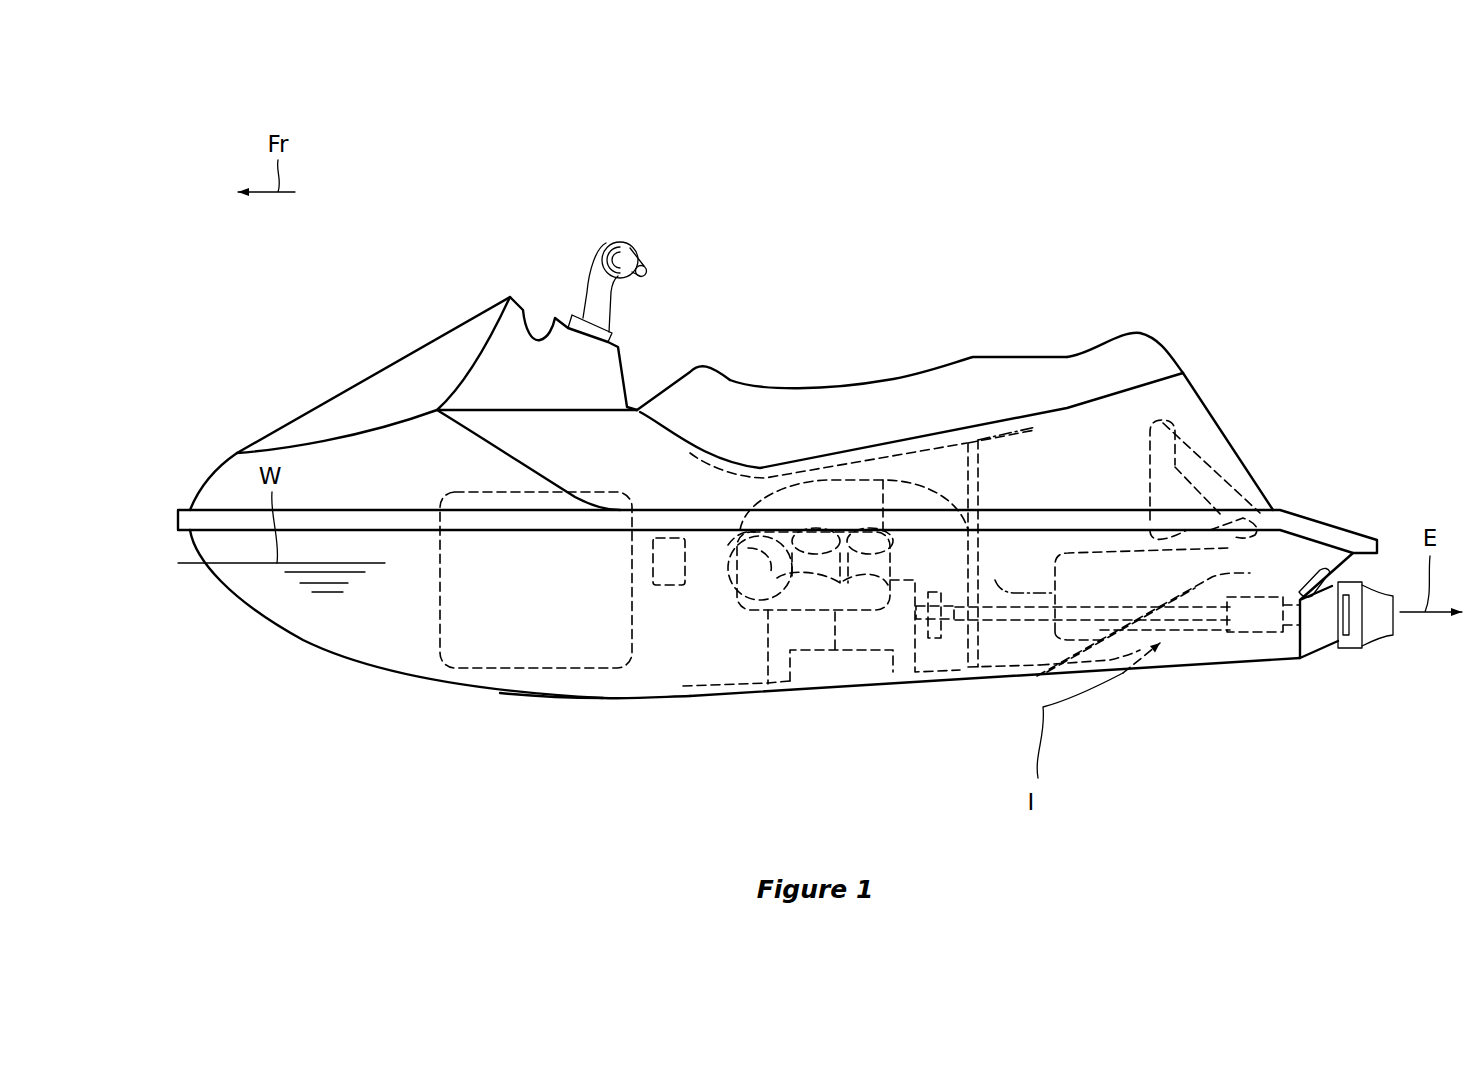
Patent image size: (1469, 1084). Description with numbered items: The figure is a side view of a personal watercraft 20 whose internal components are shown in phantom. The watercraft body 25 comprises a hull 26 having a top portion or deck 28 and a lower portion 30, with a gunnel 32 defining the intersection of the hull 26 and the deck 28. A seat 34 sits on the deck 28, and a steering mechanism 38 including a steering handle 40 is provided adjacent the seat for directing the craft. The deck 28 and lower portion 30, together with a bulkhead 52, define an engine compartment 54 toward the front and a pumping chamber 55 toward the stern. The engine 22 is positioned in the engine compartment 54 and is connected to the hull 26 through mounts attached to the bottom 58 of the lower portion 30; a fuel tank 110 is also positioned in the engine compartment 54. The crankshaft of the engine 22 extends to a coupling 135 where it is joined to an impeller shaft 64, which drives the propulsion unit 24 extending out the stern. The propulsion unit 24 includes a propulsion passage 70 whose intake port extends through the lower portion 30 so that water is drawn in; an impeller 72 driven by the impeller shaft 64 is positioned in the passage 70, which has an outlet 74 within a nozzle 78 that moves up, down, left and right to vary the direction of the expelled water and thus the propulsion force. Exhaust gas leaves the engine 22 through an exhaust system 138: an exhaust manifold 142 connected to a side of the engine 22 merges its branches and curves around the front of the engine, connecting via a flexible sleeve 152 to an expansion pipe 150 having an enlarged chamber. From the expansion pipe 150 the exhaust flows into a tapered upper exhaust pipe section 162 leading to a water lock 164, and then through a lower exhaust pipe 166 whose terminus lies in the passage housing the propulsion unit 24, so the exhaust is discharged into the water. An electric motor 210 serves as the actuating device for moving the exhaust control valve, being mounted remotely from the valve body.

The watercraft 20 is at (1243, 297).
The engine 22 is at (800, 660).
The propulsion unit 24 is at (1213, 668).
The watercraft body 25 is at (1280, 393).
The hull 26 is at (218, 437).
The deck 28 is at (655, 447).
The lower portion 30 is at (650, 668).
The gunnel 32 is at (687, 513).
The seat 34 is at (937, 393).
The steering mechanism 38 is at (583, 288).
The steering handle 40 is at (645, 267).
The bulkhead 52 is at (990, 532).
The engine compartment 54 is at (727, 598).
The pumping chamber 55 is at (1052, 455).
The bottom 58 is at (578, 700).
The impeller shaft 64 is at (1007, 622).
The propulsion passage 70 is at (1173, 647).
The impeller 72 is at (1274, 645).
The outlet 74 is at (1330, 635).
The nozzle 78 is at (1377, 630).
The fuel tank 110 is at (503, 668).
The coupling 135 is at (937, 640).
The exhaust system 138 is at (823, 483).
The exhaust manifold 142 is at (835, 613).
The expansion pipe 150 is at (860, 478).
The flexible sleeve 152 is at (763, 549).
The upper exhaust pipe section 162 is at (995, 580).
The water lock 164 is at (1108, 520).
The lower exhaust pipe 166 is at (1240, 473).
The electric motor 210 is at (653, 560).